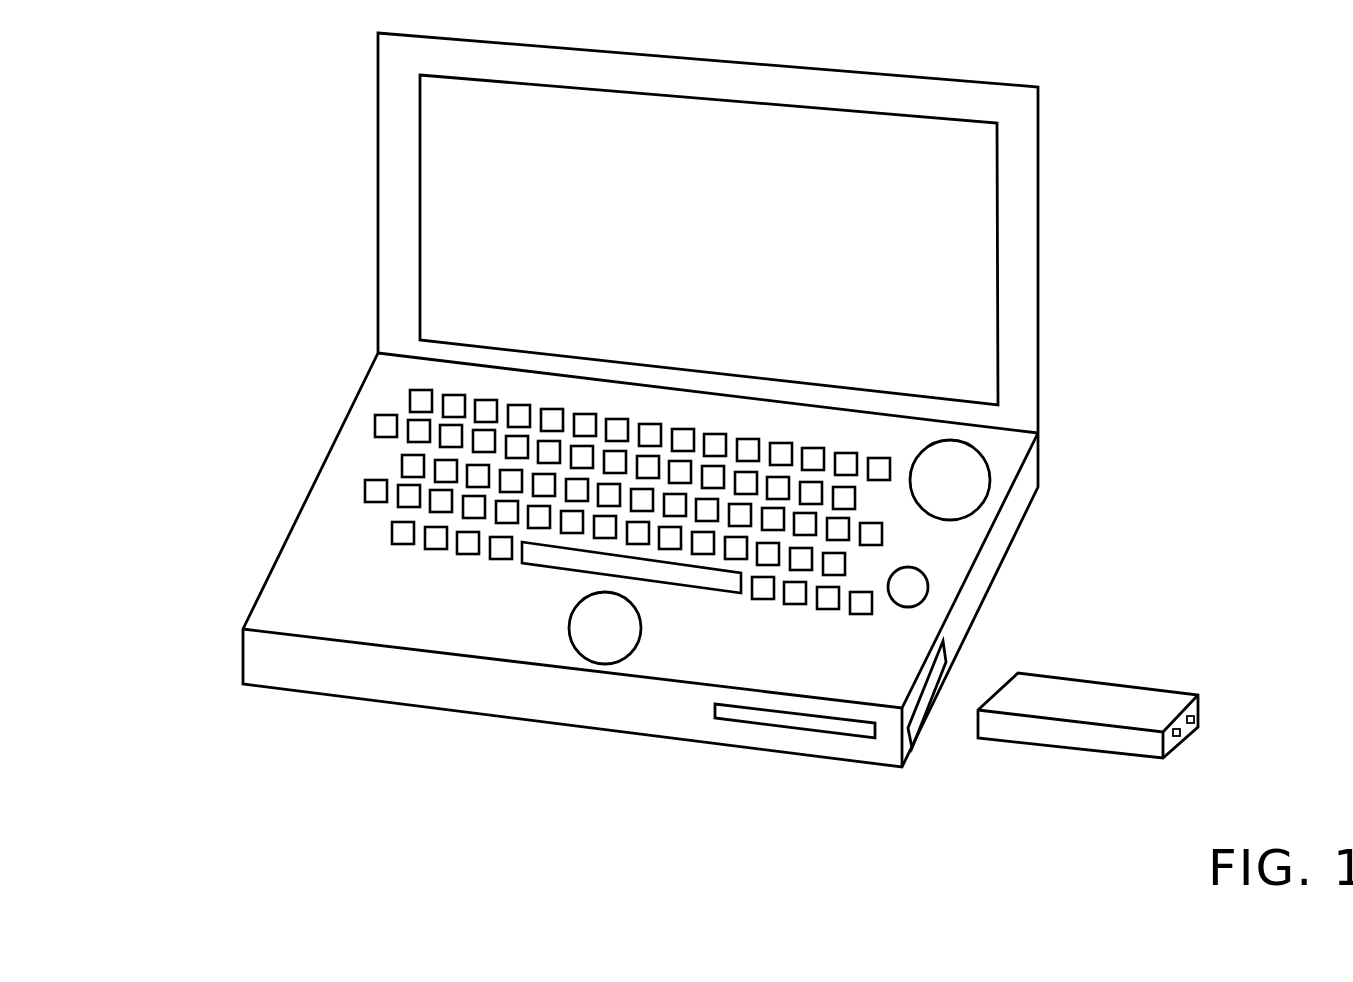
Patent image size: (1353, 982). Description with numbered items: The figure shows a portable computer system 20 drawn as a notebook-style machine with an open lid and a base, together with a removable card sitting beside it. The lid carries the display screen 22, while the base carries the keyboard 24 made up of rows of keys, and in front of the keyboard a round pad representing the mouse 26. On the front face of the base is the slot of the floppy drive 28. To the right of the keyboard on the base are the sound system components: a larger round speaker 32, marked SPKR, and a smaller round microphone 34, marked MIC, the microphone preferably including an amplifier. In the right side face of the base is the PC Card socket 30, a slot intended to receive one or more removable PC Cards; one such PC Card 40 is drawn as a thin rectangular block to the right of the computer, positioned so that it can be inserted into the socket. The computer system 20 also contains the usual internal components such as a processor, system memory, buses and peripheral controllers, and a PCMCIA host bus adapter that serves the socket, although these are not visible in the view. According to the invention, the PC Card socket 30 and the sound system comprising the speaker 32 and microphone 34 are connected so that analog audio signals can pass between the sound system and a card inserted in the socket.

The computer system 20 is at (190, 108).
The display screen 22 is at (443, 143).
The keyboard 24 is at (338, 472).
The mouse 26 is at (597, 647).
The floppy drive 28 is at (843, 730).
The PC Card socket 30 is at (925, 700).
The speaker 32 is at (980, 482).
The microphone 34 is at (920, 588).
The PC Card 40 is at (1159, 700).